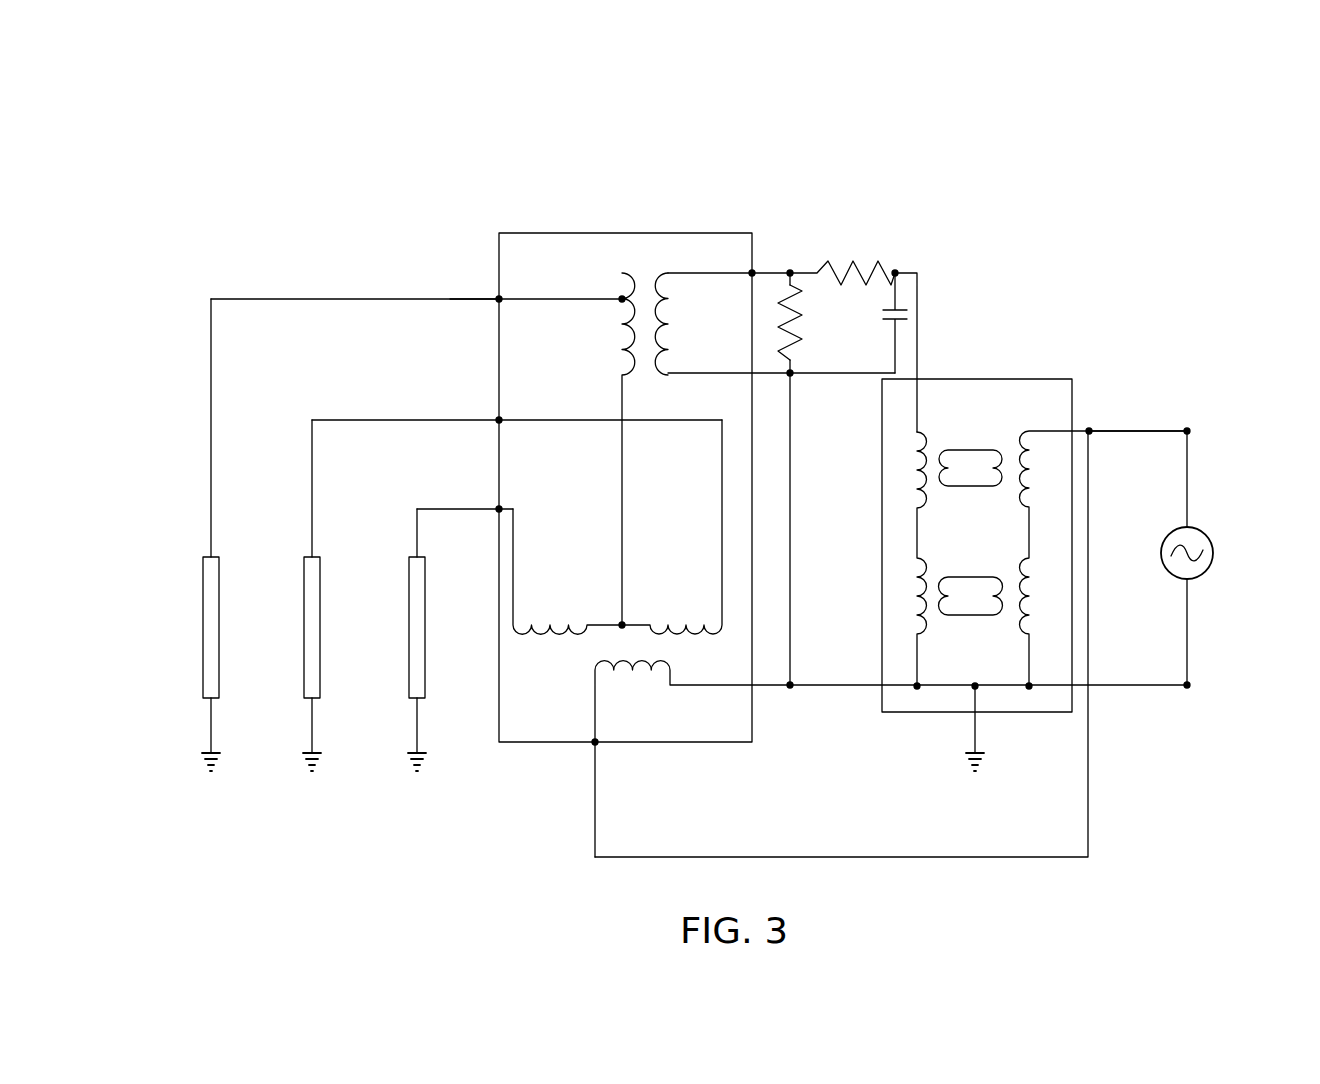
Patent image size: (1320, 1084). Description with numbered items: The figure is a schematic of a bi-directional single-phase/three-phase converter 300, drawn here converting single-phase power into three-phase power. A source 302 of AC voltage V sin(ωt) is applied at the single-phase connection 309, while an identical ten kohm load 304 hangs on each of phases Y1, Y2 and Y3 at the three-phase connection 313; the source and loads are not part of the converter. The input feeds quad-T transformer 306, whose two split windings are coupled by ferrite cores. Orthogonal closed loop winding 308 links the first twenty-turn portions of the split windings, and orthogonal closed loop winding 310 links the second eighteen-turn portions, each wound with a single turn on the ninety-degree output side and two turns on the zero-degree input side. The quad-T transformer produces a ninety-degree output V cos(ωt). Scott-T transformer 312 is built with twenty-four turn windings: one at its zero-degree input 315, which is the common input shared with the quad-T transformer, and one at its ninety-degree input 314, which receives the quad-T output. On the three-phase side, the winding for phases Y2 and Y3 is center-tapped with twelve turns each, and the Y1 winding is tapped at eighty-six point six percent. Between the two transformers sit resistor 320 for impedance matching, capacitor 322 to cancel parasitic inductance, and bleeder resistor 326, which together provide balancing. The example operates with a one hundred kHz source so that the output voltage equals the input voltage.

The converter 300 is at (1088, 191).
The source 302 is at (1213, 554).
The load 304 is at (203, 669).
The quad-T transformer 306 is at (1003, 379).
The orthogonal closed loop winding 308 is at (970, 487).
The single-phase connection 309 is at (1187, 431).
The orthogonal closed loop winding 310 is at (970, 615).
The Scott-T transformer 312 is at (622, 233).
The three-phase connection 313 is at (499, 299).
The 90-degree input 314 is at (752, 273).
The 0-degree input 315 is at (595, 742).
The resistor 320 is at (881, 269).
The capacitor 322 is at (893, 322).
The bleeder resistor 326 is at (803, 321).